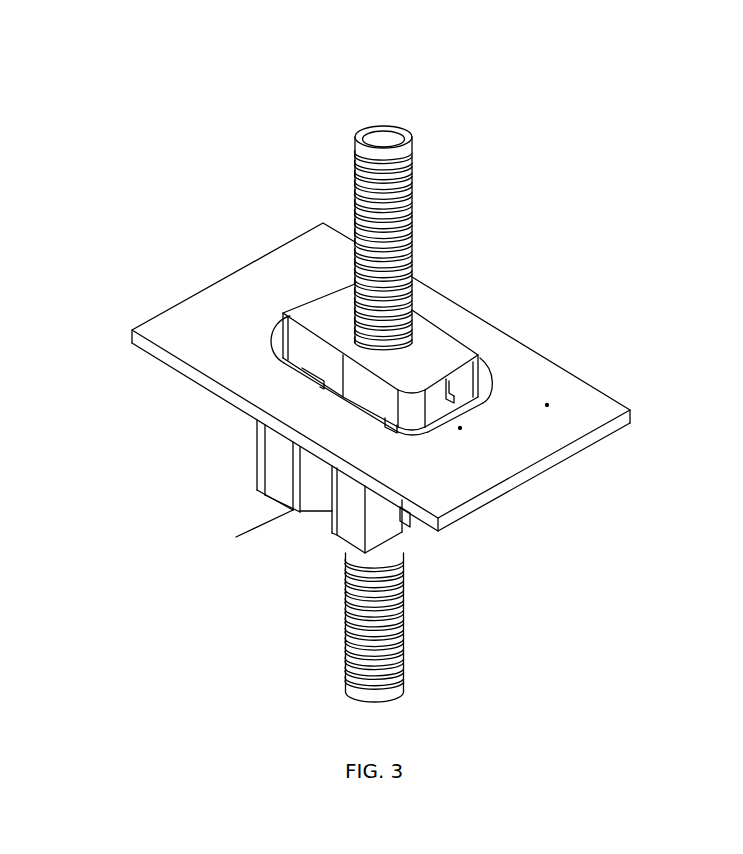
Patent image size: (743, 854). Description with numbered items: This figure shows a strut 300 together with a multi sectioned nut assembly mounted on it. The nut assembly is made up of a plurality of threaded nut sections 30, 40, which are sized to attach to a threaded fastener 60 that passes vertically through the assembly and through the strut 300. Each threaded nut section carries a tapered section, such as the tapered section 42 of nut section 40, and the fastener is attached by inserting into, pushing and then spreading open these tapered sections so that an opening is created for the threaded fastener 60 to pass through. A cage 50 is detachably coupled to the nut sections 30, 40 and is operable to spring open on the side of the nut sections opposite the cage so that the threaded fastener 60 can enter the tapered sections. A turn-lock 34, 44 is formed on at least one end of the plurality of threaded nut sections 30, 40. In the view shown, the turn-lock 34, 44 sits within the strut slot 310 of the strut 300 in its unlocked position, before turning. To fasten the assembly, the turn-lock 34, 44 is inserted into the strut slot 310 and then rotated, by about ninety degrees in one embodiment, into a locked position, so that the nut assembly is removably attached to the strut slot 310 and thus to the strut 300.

The threaded nut section 30 is at (422, 357).
The turn-lock 34 is at (460, 384).
The threaded nut section 40 is at (330, 306).
The tapered section 42 is at (305, 500).
The turn-lock 44 is at (290, 322).
The cage 50 is at (407, 520).
The threaded fastener 60 is at (387, 140).
The strut 300 is at (547, 405).
The strut slot 310 is at (460, 428).